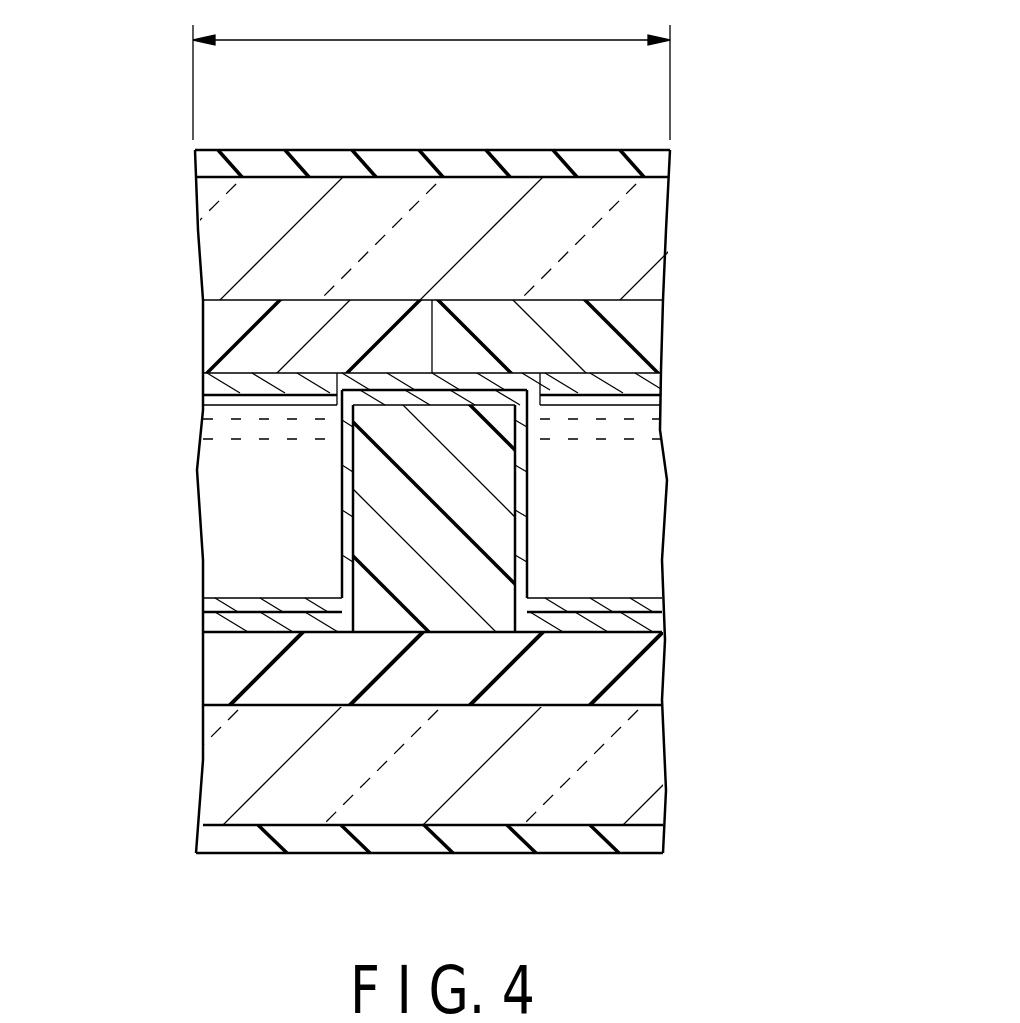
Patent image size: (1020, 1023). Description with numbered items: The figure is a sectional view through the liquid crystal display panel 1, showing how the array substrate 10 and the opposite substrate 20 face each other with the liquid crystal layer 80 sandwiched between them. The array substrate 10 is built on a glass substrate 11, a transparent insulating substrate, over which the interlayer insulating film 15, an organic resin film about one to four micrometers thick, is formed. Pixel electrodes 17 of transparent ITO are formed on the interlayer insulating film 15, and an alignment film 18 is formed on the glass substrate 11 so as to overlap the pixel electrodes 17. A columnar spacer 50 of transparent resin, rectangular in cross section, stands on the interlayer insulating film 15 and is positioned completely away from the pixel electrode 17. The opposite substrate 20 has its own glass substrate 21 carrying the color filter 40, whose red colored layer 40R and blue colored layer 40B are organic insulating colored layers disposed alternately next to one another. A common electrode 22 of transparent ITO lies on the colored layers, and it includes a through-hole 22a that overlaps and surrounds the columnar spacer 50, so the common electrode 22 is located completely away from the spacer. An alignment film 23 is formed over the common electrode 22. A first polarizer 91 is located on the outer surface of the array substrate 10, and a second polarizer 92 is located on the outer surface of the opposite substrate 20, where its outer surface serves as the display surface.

The liquid crystal display panel 1 is at (510, 430).
The array substrate 10 is at (531, 505).
The glass substrate 11 is at (642, 778).
The interlayer insulating film 15 is at (647, 682).
The pixel electrode 17 is at (205, 622).
The alignment film 18 is at (597, 592).
The opposite substrate 20 is at (385, 495).
The glass substrate 21 is at (650, 238).
The common electrode 22 is at (650, 378).
The through-hole 22a is at (363, 373).
The alignment film 23 is at (643, 402).
The color filter 40 is at (510, 505).
The blue colored layer 40B is at (263, 313).
The red colored layer 40R is at (536, 320).
The columnar spacer 50 is at (393, 537).
The liquid crystal layer 80 is at (210, 478).
The first polarizer 91 is at (648, 836).
The second polarizer 92 is at (660, 163).